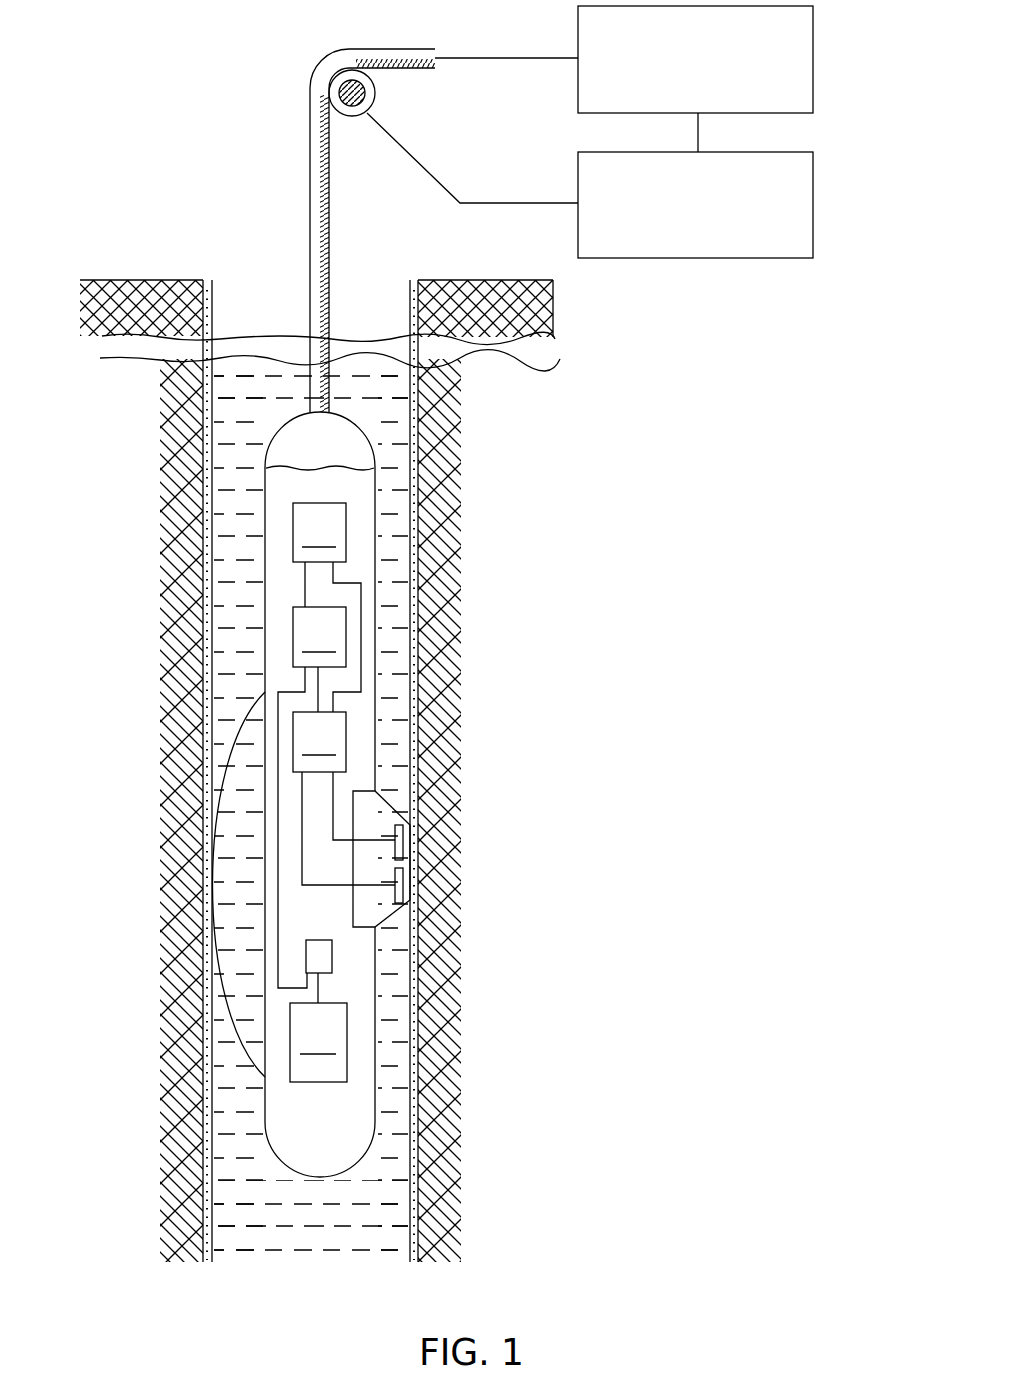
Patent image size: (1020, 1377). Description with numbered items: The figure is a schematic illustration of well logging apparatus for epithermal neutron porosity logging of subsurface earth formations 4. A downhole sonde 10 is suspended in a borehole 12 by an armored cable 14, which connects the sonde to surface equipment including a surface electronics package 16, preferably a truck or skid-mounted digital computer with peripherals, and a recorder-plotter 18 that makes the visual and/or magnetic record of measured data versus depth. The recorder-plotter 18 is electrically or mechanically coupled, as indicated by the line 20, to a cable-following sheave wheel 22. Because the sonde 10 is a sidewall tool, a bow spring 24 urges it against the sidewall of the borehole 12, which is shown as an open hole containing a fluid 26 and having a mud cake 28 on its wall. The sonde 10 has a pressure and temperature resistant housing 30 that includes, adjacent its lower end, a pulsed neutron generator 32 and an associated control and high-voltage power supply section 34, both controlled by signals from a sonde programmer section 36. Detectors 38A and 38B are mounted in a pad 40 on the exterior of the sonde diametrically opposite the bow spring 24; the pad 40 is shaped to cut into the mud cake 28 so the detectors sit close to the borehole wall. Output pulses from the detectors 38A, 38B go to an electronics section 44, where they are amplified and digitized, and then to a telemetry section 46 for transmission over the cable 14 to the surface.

The earth formation 4 is at (450, 772).
The downhole sonde 10 is at (424, 794).
The borehole 12 is at (275, 330).
The armored cable 14 is at (330, 218).
The surface electronics package 16 is at (813, 63).
The recorder-plotter 18 is at (813, 203).
The line 20 is at (487, 203).
The cable-following sheave wheel 22 is at (376, 90).
The bow spring 24 is at (232, 1012).
The fluid 26 is at (325, 1235).
The mud cake 28 is at (397, 593).
The housing 30 is at (377, 535).
The pulsed neutron generator 32 is at (325, 958).
The control and high-voltage power supply section 34 is at (318, 1042).
The sonde programmer section 36 is at (319, 637).
The detector 38A is at (403, 846).
The detector 38B is at (403, 888).
The pad 40 is at (378, 912).
The electronics section 44 is at (319, 742).
The telemetry section 46 is at (319, 532).